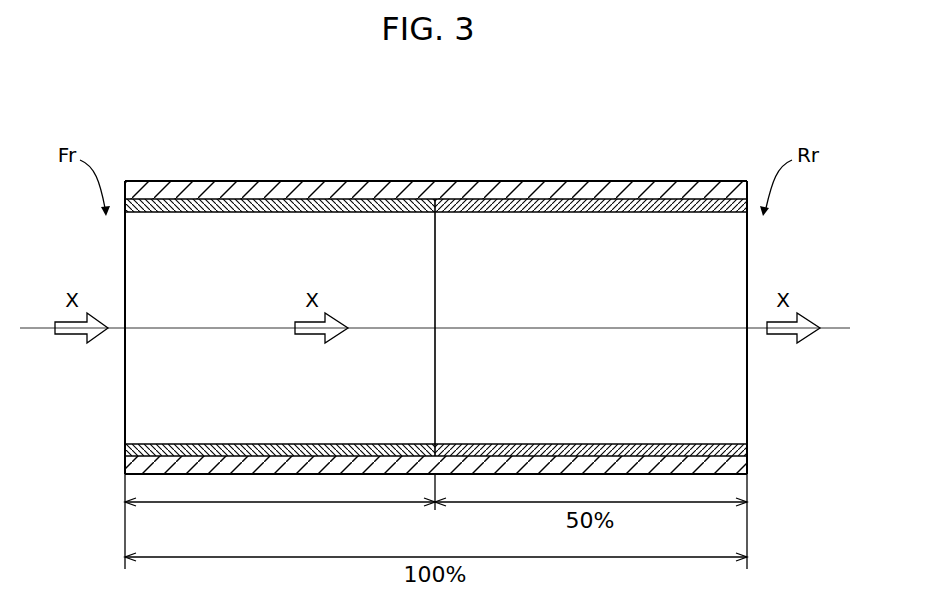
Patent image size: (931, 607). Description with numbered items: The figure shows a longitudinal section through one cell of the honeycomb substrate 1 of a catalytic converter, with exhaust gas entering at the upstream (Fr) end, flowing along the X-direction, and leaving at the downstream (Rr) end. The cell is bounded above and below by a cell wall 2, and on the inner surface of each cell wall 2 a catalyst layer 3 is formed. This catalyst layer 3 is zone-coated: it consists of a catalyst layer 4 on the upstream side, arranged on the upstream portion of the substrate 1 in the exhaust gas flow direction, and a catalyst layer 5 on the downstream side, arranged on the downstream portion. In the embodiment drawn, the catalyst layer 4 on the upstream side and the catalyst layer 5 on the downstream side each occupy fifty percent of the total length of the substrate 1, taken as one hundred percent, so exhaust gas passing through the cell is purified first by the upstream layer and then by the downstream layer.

The substrate 1 is at (410, 276).
The cell wall 2 is at (235, 191).
The catalyst layer 3 is at (436, 267).
The catalyst layer on the upstream side 4 is at (362, 205).
The catalyst layer on the downstream side 5 is at (591, 285).